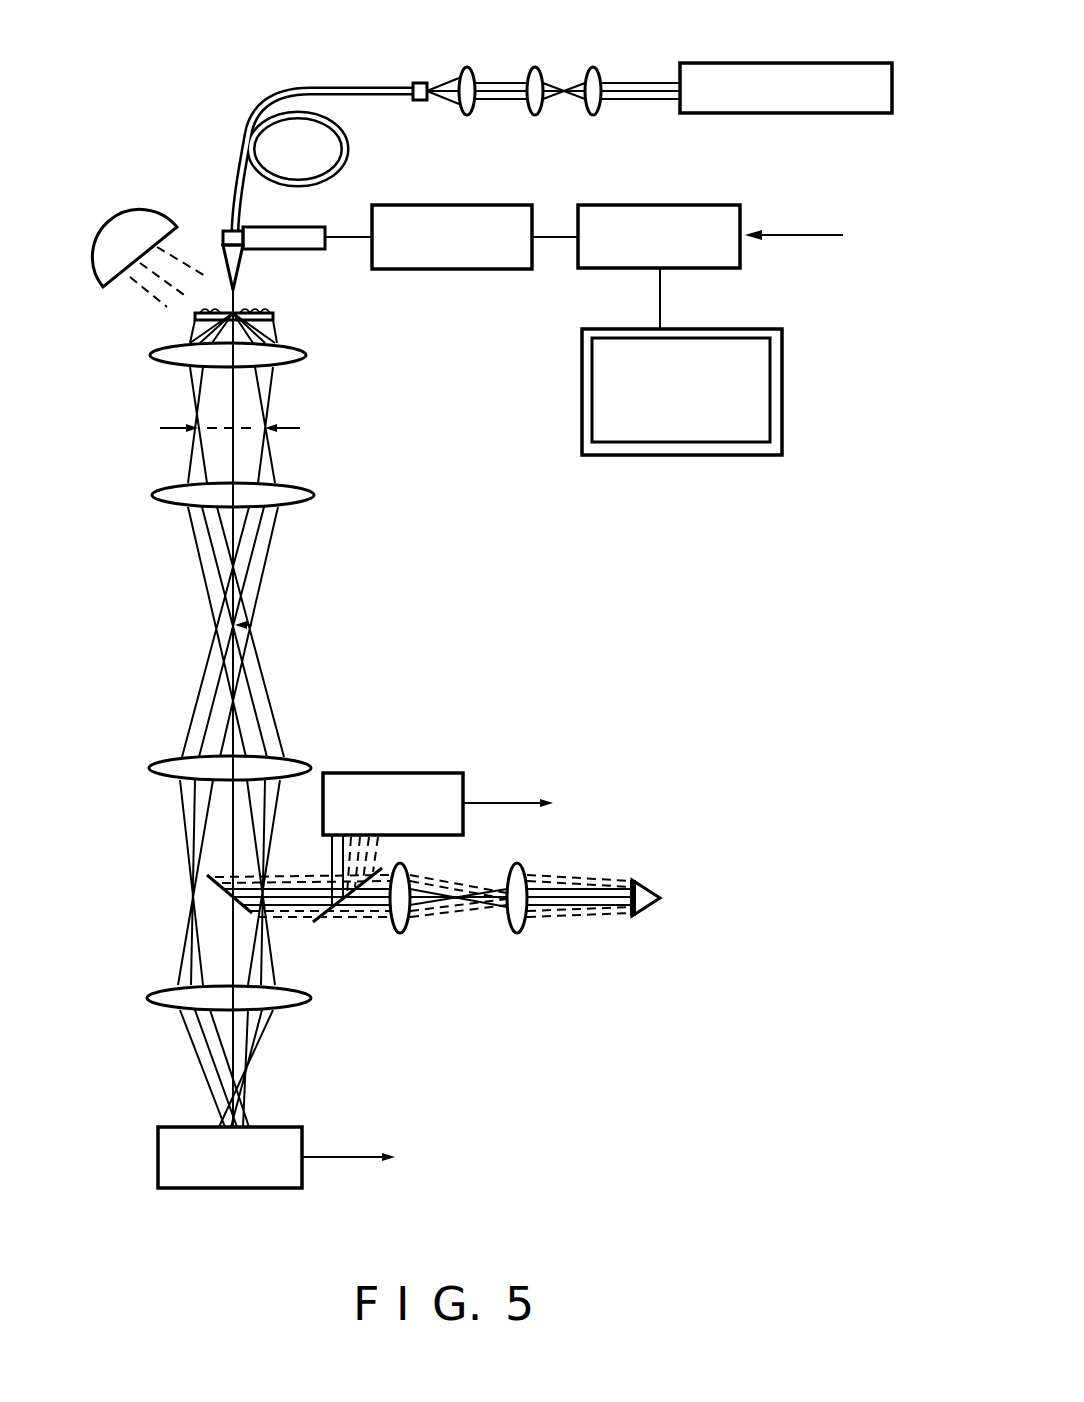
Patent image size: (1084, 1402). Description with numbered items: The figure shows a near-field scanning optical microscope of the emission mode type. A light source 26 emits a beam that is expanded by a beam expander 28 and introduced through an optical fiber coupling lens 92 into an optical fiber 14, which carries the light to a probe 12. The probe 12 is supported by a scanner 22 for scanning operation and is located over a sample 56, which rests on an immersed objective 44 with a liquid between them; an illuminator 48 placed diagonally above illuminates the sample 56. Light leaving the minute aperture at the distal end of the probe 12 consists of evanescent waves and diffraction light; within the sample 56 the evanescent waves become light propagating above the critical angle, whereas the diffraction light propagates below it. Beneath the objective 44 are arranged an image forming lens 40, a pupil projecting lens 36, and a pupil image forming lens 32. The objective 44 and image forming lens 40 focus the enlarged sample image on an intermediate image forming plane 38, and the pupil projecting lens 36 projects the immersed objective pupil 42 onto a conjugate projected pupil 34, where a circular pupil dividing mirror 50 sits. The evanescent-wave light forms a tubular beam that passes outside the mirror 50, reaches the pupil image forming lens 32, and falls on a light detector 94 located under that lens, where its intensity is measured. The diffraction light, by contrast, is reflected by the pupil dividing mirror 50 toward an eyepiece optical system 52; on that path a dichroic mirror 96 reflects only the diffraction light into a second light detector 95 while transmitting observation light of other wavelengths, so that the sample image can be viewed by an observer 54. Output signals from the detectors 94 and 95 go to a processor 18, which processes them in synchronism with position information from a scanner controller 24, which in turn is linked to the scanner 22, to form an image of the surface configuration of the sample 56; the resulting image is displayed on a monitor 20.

The probe 12 is at (242, 275).
The optical fiber 14 is at (292, 86).
The processor 18 is at (651, 203).
The monitor 20 is at (784, 387).
The scanner 22 is at (320, 226).
The scanner controller 24 is at (462, 270).
The light source 26 is at (786, 62).
The beam expander 28 is at (610, 58).
The pupil image forming lens 32 is at (147, 998).
The projected pupil 34 is at (172, 895).
The pupil projecting lens 36 is at (148, 768).
The intermediate image forming plane 38 is at (207, 628).
The image forming lens 40 is at (152, 497).
The immersed objective pupil 42 is at (160, 428).
The immersed objective 44 is at (138, 322).
The illuminator 48 is at (121, 214).
The pupil dividing mirror 50 is at (246, 912).
The eyepiece optical system 52 is at (530, 937).
The observer 54 is at (653, 890).
The sample 56 is at (275, 316).
The optical fiber coupling lens 92 is at (478, 58).
The light detector 94 is at (158, 1160).
The light detector 95 is at (385, 773).
The dichroic mirror 96 is at (330, 915).